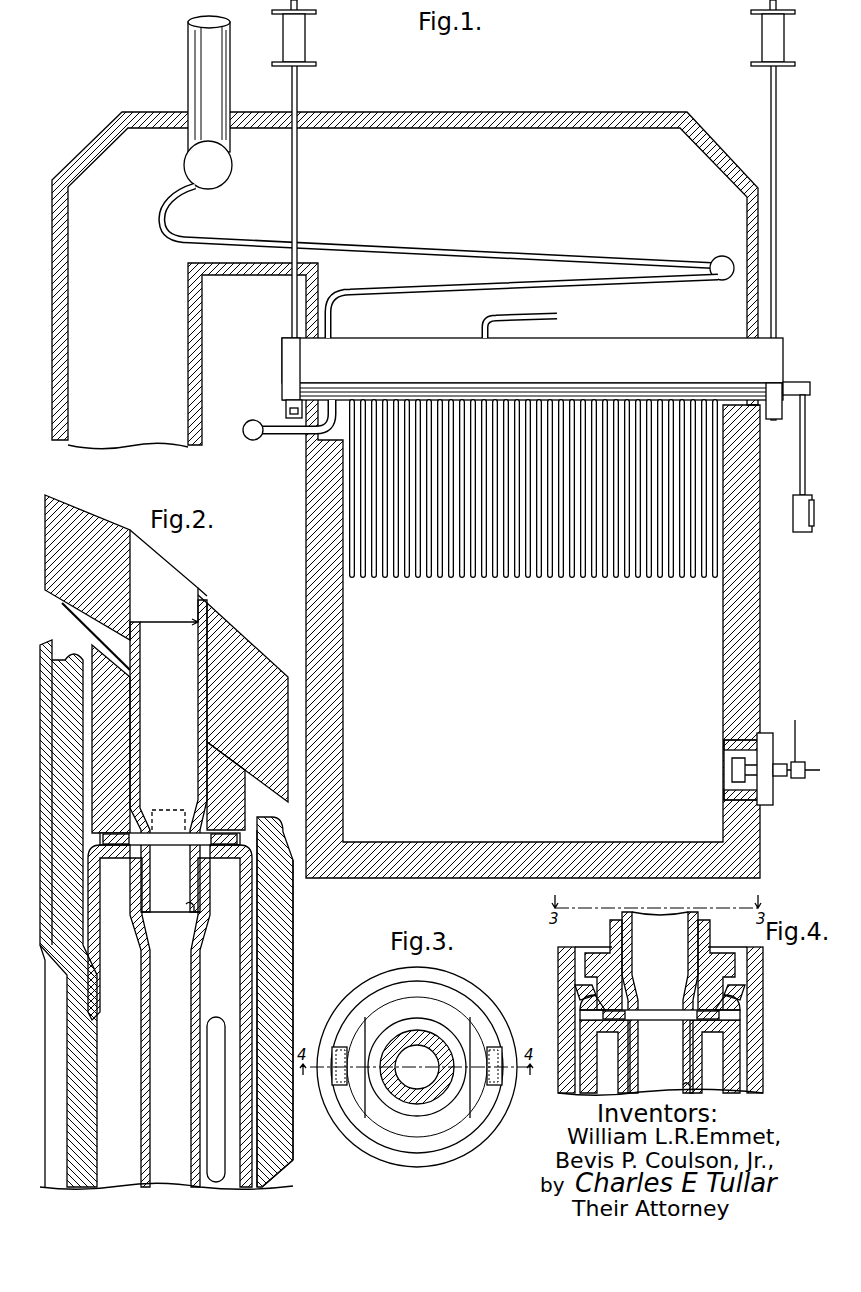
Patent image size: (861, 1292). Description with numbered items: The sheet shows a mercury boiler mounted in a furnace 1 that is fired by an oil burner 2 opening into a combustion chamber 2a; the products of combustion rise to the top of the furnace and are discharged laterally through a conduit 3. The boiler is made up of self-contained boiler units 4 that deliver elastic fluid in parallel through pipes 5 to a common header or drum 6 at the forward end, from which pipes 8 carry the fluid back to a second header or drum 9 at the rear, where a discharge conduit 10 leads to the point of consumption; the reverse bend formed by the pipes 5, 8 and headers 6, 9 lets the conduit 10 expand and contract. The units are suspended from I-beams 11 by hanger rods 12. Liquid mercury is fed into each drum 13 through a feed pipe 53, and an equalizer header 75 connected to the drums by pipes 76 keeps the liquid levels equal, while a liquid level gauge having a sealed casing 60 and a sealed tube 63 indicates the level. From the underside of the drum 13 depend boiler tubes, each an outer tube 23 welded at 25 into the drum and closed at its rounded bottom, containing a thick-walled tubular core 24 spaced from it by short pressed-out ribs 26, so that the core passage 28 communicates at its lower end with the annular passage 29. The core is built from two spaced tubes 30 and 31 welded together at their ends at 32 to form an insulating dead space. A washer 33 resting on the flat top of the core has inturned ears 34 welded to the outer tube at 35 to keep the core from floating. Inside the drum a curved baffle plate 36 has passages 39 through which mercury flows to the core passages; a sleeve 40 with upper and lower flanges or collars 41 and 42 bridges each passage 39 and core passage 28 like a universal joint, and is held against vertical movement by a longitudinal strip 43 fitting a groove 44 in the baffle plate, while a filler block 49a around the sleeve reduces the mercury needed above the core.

In FIG. 1, the furnace 1 is at (764, 660).
In FIG. 1, the oil burner 2 is at (768, 742).
In FIG. 1, the combustion chamber 2a is at (533, 641).
In FIG. 1, the conduit 3 is at (405, 280).
In FIG. 1, the boiler unit 4 is at (282, 362).
In FIG. 1, the pipe 5 is at (436, 290).
In FIG. 1, the header or drum 6 is at (722, 256).
In FIG. 1, the pipe 8 is at (422, 246).
In FIG. 1, the header or drum 9 is at (228, 164).
In FIG. 1, the conduit 10 is at (188, 78).
In FIG. 1, the I-beam 11 is at (306, 50).
In FIG. 1, the hanger rod 12 is at (297, 200).
In FIG. 1, the drum 13 is at (624, 350).
In FIG. 2, the drum 13 is at (282, 1002).
In FIG. 1, the outer tube 23 is at (546, 578).
In FIG. 2, the outer tube 23 is at (285, 976).
In FIG. 3, the outer tube 23 is at (458, 978).
In FIG. 2, the tubular core 24 is at (242, 945).
In FIG. 2, the weld 25 is at (275, 846).
In FIG. 2, the rib 26 is at (86, 1076).
In FIG. 2, the core passage 28 is at (166, 1050).
In FIG. 2, the annular passage 29 is at (256, 1038).
In FIG. 2, the inner tube 30 is at (150, 986).
In FIG. 4, the inner tube 30 is at (622, 1074).
In FIG. 2, the outer core tube 31 is at (98, 996).
In FIG. 4, the outer core tube 31 is at (586, 1046).
In FIG. 2, the weld 32 is at (126, 848).
In FIG. 2, the washer 33 is at (224, 848).
In FIG. 3, the washer 33 is at (494, 1047).
In FIG. 4, the washer 33 is at (740, 1018).
In FIG. 4, the ear 34 is at (742, 1002).
In FIG. 4, the weld 35 is at (742, 990).
In FIG. 2, the baffle plate 36 is at (84, 512).
In FIG. 2, the passage 39 is at (166, 592).
In FIG. 2, the sleeve 40 is at (140, 756).
In FIG. 3, the sleeve 40 is at (393, 1097).
In FIG. 4, the sleeve 40 is at (632, 956).
In FIG. 2, the flange or collar 41 is at (212, 624).
In FIG. 2, the flange or collar 42 is at (192, 912).
In FIG. 4, the flange or collar 42 is at (683, 1090).
In FIG. 2, the strip 43 is at (205, 600).
In FIG. 2, the groove 44 is at (210, 612).
In FIG. 2, the filler block 49a is at (118, 698).
In FIG. 1, the feed pipe 53 is at (530, 316).
In FIG. 1, the sealed casing 60 is at (800, 382).
In FIG. 1, the sealed tube 63 is at (805, 460).
In FIG. 1, the equalizer header 75 is at (246, 437).
In FIG. 1, the pipe 76 is at (290, 435).